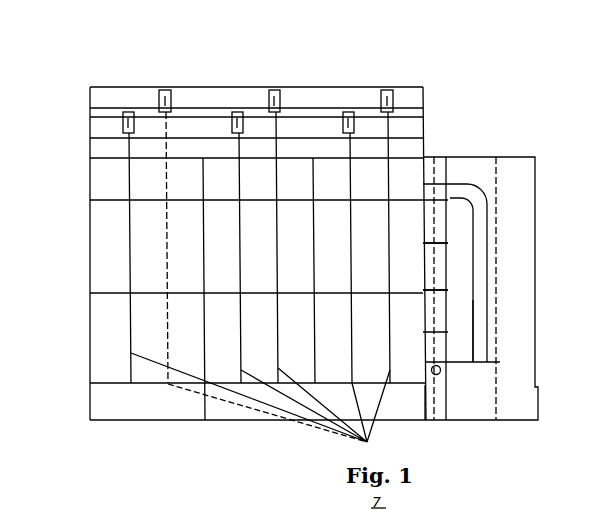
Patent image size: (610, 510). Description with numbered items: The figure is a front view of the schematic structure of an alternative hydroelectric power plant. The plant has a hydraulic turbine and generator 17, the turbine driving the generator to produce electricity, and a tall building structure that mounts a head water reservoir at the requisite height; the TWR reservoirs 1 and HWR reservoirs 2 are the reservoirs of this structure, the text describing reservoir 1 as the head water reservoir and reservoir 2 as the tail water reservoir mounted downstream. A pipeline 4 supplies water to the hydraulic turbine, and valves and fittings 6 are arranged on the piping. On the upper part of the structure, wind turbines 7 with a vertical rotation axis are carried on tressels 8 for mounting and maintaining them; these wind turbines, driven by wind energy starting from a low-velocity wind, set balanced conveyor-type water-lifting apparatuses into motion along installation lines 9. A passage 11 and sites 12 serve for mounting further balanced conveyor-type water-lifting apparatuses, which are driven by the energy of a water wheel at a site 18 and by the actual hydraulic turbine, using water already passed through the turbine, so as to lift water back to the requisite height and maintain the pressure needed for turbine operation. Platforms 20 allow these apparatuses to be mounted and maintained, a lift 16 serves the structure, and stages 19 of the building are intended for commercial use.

The TWR reservoirs 1 is at (342, 400).
The HWR reservoirs 2 is at (91, 188).
The pipeline supplying water to the hydraulic turbine 4 is at (486, 192).
The valves and fittings 6 is at (425, 402).
The wind turbine with vertical rotation axis 7 is at (232, 112).
The tressels for the wind turbine mounting and maintaining 8 is at (431, 157).
The installation lines for BCWLA set into motion by the wind turbines 9 is at (260, 399).
The passage for mounting BCWLA set into motion by moving water and the hydraulic tur 11 is at (447, 170).
The sites for mounting BCWLA set into motion by moving water and the hydraulic turbi 12 is at (468, 184).
The lift 16 is at (513, 172).
The hydraulic turbine and generator 17 is at (458, 403).
The site for mounting a water wheel 18 is at (440, 373).
The stages for commercial use 19 is at (91, 293).
The platforms for mounting and maintaining BCWLA 20 is at (447, 201).